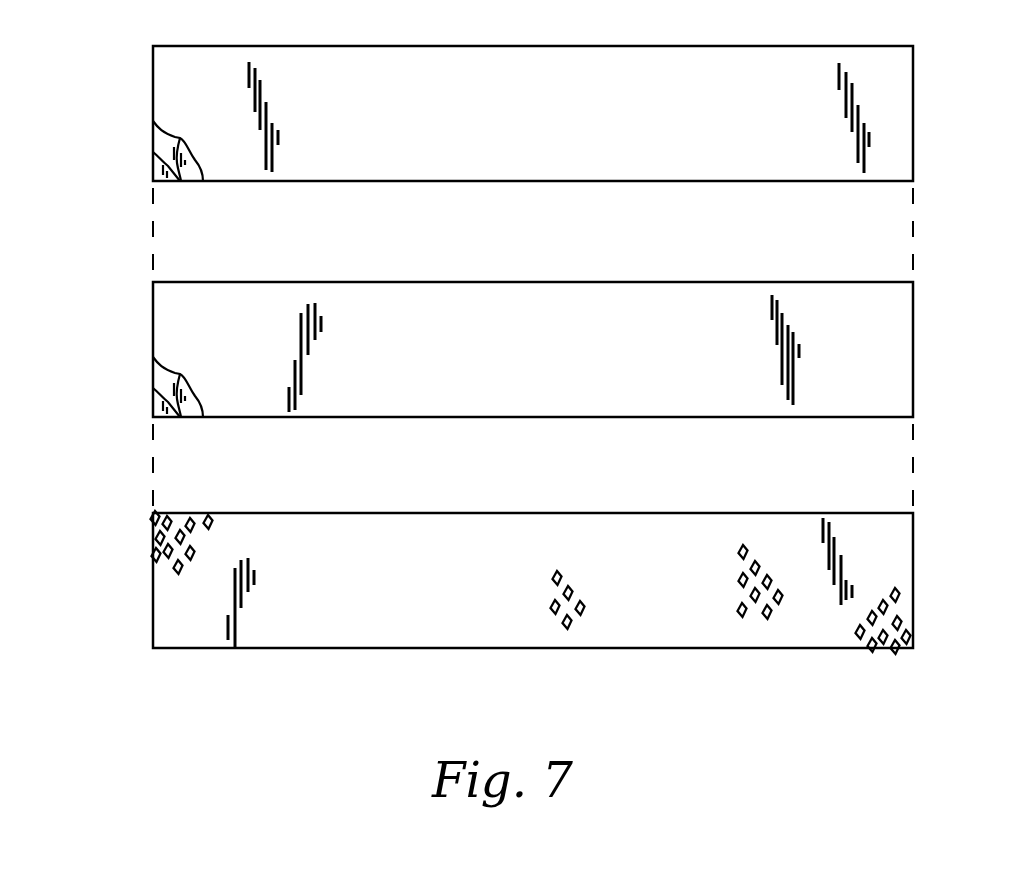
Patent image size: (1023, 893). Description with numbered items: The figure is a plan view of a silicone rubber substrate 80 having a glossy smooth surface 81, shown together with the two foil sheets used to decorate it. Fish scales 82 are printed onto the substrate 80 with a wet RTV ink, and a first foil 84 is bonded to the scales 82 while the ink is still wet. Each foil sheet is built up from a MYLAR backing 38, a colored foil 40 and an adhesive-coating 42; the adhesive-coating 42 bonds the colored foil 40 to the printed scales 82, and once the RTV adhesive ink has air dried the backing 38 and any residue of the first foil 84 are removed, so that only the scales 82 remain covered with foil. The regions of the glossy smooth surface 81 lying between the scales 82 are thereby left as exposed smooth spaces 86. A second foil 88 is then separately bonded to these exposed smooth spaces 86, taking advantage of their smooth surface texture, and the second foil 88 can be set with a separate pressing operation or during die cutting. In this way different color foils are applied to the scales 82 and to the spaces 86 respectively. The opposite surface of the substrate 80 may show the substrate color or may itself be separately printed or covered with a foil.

The MYLAR backing 38 is at (167, 87).
The colored foil 40 is at (162, 140).
The adhesive-coating 42 is at (157, 173).
The silicone rubber substrate 80 is at (931, 575).
The glossy smooth surface 81 is at (312, 627).
The fish scales 82 is at (551, 606).
The first foil 84 is at (931, 351).
The exposed smooth spaces 86 is at (743, 596).
The second foil 88 is at (931, 120).